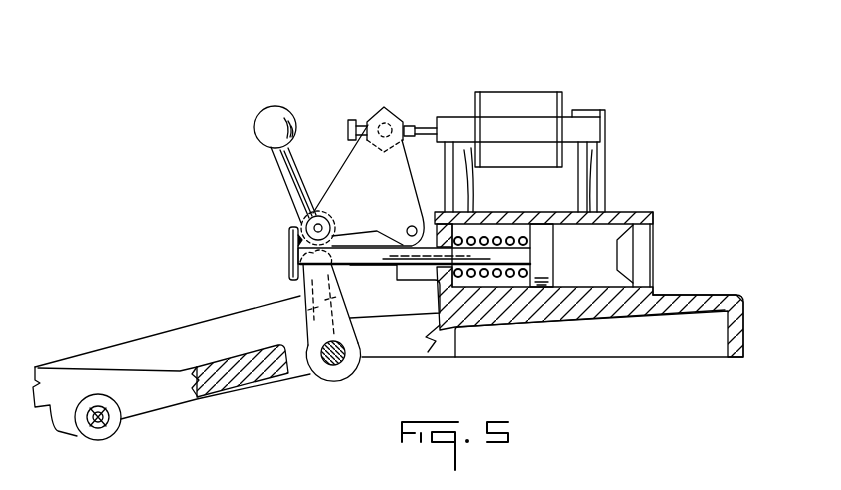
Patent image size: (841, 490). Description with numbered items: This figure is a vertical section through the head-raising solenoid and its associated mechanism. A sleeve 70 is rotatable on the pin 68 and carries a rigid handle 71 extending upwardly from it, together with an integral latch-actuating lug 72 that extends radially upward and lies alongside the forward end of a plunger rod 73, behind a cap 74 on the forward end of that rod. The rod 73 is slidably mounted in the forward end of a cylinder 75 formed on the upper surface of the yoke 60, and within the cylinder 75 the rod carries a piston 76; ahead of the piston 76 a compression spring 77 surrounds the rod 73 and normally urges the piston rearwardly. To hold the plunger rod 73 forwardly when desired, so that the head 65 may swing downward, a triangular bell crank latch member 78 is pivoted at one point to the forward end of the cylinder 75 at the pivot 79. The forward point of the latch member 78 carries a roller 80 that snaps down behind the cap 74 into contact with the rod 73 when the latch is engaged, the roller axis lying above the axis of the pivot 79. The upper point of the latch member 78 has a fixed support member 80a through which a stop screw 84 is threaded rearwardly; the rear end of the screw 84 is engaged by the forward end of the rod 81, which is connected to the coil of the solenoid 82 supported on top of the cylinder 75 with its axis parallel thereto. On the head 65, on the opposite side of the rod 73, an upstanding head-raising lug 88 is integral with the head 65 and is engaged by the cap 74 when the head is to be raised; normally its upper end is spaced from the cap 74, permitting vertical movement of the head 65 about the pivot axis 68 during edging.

The yoke 60 is at (685, 300).
The head 65 is at (158, 343).
The pin 68 is at (333, 364).
The sleeve 70 is at (350, 363).
The handle 71 is at (273, 118).
The latch-actuating lug 72 is at (313, 297).
The plunger rod 73 is at (373, 260).
The cap 74 is at (292, 246).
The cylinder 75 is at (515, 201).
The piston 76 is at (545, 263).
The compression spring 77 is at (513, 280).
The bell crank latch member 78 is at (355, 177).
The pivot 79 is at (413, 223).
The roller 80 is at (294, 222).
The fixed support member 80a is at (393, 111).
The rod 81 is at (419, 125).
The solenoid 82 is at (538, 102).
The stop screw 84 is at (349, 120).
The head-raising lug 88 is at (247, 333).